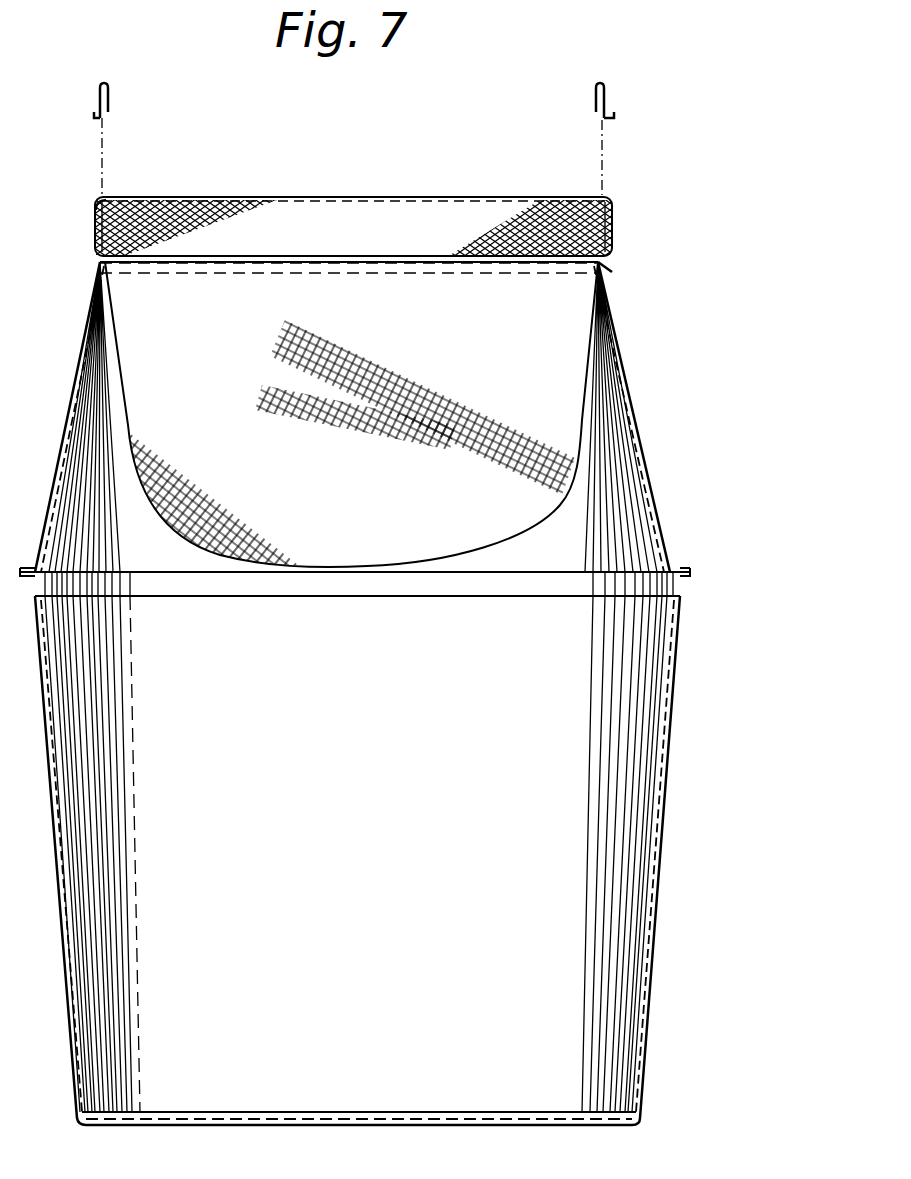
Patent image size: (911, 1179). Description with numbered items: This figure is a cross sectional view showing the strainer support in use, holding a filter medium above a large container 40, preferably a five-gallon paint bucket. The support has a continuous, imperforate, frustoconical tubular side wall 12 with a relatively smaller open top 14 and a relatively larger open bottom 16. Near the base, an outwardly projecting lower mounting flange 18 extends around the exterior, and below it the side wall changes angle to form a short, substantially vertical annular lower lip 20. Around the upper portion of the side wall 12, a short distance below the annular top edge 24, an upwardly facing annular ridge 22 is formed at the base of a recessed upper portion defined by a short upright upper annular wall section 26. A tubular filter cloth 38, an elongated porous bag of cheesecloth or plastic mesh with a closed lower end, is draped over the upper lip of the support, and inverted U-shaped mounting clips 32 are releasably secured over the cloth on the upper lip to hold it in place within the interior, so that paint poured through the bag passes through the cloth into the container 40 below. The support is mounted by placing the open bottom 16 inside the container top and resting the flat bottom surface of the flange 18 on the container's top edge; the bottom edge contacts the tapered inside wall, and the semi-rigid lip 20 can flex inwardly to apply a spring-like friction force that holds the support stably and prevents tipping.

The side wall 12 is at (645, 424).
The open top 14 is at (332, 192).
The open bottom 16 is at (246, 604).
The lower mounting flange 18 is at (679, 570).
The lower lip 20 is at (447, 588).
The annular ridge 22 is at (612, 270).
The top edge 24 is at (388, 201).
The upper annular wall section 26 is at (126, 196).
The mounting clip 32 is at (110, 92).
The filter cloth 38 is at (190, 540).
The container 40 is at (662, 832).